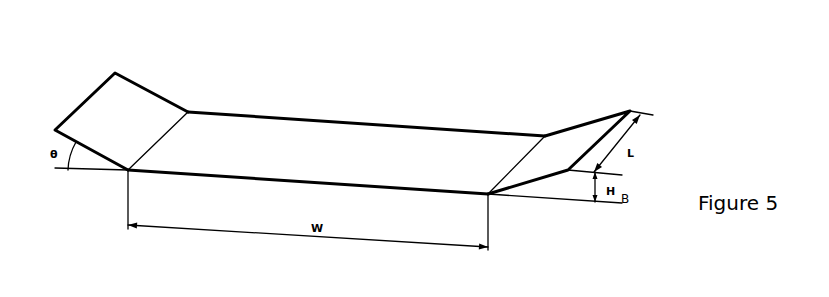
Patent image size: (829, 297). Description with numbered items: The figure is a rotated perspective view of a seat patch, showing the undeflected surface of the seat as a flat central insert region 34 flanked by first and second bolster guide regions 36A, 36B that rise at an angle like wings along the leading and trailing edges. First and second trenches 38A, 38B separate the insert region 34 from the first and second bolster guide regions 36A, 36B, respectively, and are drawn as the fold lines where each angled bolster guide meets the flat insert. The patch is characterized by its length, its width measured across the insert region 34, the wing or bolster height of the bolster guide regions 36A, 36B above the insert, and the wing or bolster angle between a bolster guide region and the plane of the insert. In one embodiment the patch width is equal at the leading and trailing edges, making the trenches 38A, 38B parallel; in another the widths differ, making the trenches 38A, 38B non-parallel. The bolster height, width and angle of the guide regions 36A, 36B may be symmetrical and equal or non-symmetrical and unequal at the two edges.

The insert region 34 is at (343, 120).
The first bolster guide region 36A is at (136, 82).
The first trench 38A is at (173, 132).
The second bolster guide region 36B is at (588, 123).
The second trench 38B is at (523, 157).